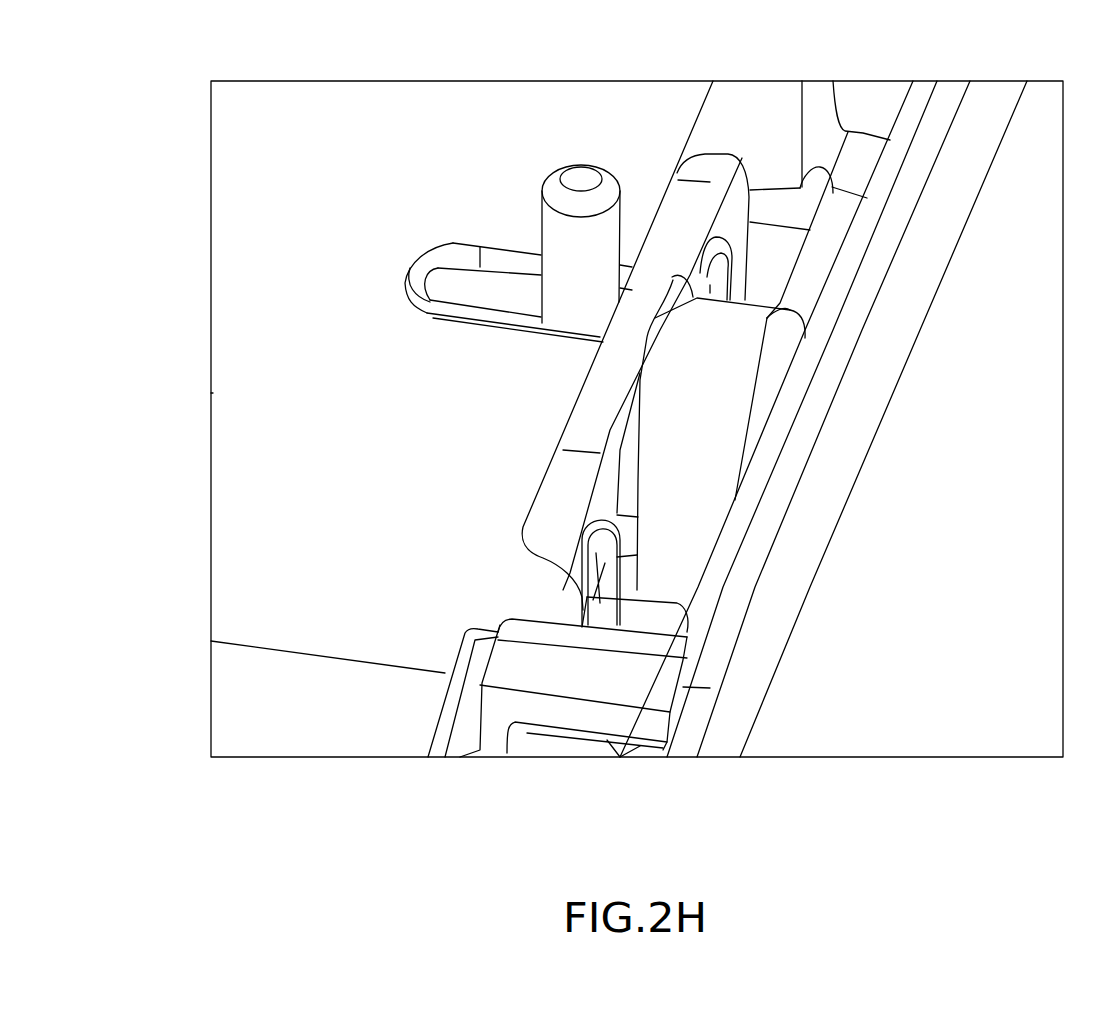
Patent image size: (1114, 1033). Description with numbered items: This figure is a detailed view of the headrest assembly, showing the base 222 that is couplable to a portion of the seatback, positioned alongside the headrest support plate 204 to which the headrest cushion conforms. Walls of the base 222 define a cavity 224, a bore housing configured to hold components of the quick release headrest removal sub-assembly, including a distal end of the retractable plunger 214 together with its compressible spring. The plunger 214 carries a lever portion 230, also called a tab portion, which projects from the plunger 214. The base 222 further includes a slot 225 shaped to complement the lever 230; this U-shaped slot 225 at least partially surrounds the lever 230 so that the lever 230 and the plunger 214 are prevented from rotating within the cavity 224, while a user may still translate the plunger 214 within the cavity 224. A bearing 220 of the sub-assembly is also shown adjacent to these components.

The headrest support plate 204 is at (993, 98).
The retractable plunger 214 is at (567, 157).
The bearing 220 is at (690, 188).
The base 222 is at (297, 112).
The cavity 224 is at (453, 287).
The slot 225 is at (433, 313).
The lever portion 230 is at (580, 178).